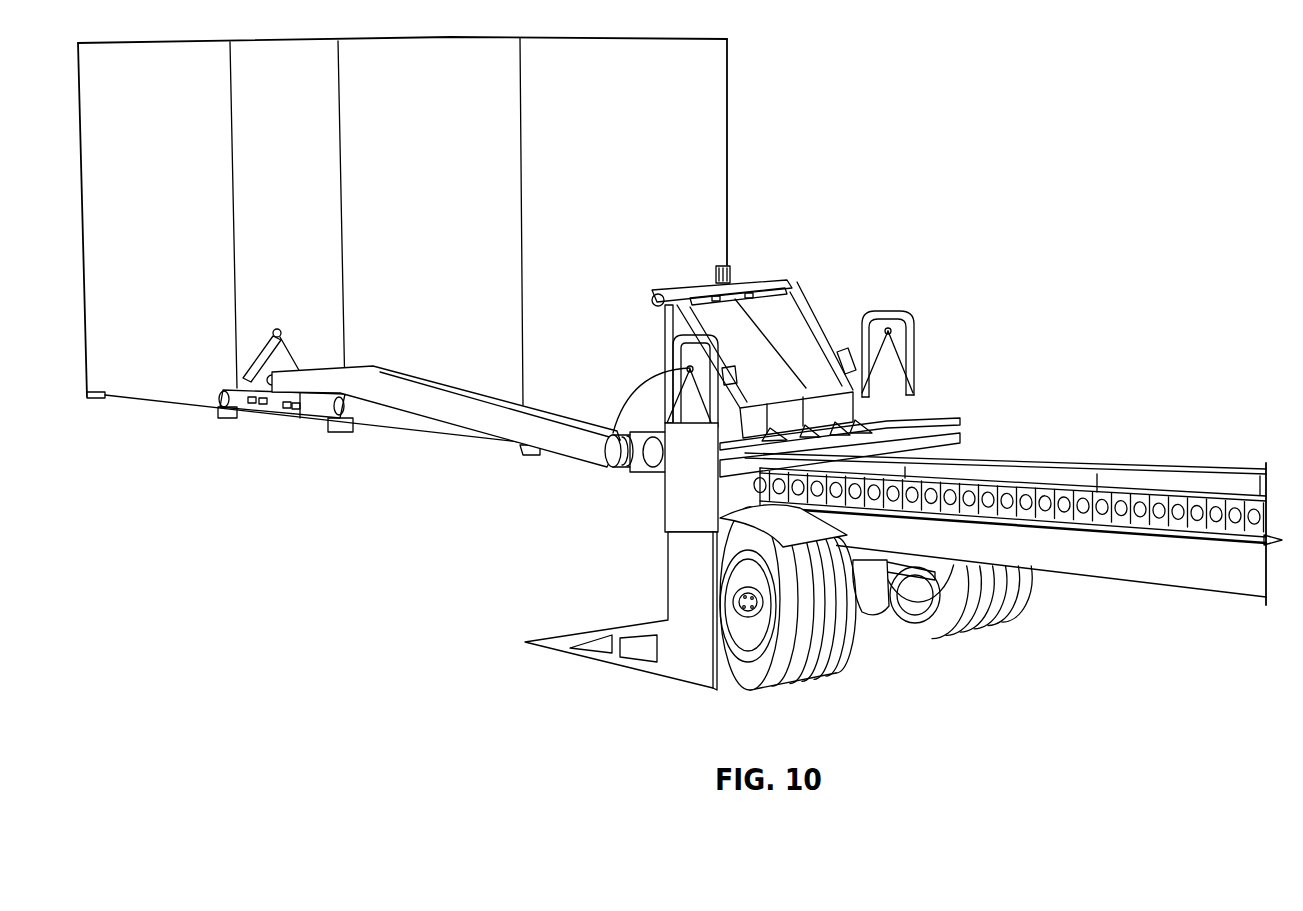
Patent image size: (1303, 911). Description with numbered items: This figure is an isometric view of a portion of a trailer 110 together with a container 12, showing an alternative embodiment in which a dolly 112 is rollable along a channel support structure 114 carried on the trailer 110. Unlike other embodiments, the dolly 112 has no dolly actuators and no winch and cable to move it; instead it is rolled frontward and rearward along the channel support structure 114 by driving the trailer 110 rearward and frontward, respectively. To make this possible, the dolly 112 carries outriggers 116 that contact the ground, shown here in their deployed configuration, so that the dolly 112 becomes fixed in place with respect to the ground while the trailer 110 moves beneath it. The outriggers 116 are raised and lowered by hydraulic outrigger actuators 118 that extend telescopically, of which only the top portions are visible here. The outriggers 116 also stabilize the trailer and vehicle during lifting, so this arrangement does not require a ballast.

The container 12 is at (715, 120).
The trailer 110 is at (1076, 446).
The dolly 112 is at (838, 296).
The channel support structure 114 is at (1127, 478).
The outriggers 116 is at (677, 665).
The hydraulic outrigger actuators 118 is at (607, 457).